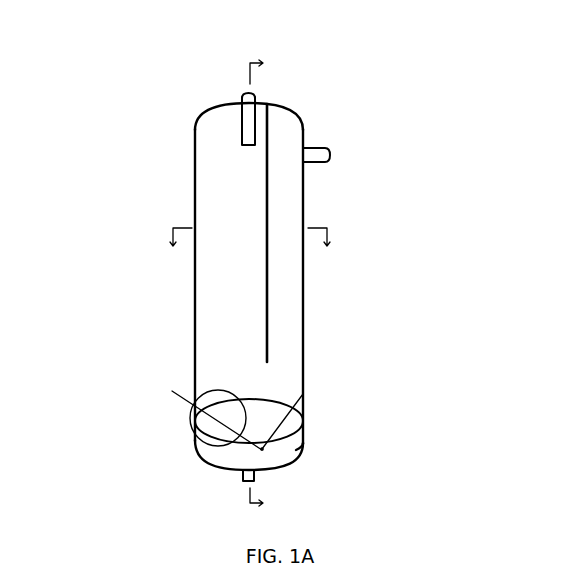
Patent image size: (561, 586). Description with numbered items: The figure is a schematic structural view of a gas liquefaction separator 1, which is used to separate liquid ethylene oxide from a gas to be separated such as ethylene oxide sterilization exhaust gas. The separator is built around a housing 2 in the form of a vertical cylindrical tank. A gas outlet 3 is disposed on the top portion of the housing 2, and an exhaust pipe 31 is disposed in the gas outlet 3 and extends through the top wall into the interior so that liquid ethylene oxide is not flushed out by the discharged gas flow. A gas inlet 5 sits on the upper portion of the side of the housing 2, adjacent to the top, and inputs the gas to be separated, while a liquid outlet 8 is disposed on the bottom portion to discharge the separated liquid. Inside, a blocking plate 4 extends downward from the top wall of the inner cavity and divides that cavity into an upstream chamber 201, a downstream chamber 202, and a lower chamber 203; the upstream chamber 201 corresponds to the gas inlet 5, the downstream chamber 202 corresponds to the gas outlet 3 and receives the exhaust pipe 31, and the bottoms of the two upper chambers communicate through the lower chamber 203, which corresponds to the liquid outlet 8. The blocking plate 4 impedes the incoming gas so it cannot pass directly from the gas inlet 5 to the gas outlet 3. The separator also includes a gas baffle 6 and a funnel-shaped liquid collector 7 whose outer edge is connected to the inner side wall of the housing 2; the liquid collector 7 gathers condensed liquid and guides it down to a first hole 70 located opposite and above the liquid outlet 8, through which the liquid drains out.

The gas liquefaction separator 1 is at (242, 45).
The housing 2 is at (212, 114).
The gas outlet 3 is at (242, 108).
The exhaust pipe 31 is at (257, 101).
The blocking plate 4 is at (269, 273).
The gas inlet 5 is at (308, 150).
The gas baffle 6 is at (303, 394).
The liquid collector 7 is at (308, 442).
The first hole 70 is at (262, 450).
The liquid outlet 8 is at (243, 478).
The upstream chamber 201 is at (285, 214).
The downstream chamber 202 is at (217, 233).
The lower chamber 203 is at (253, 385).